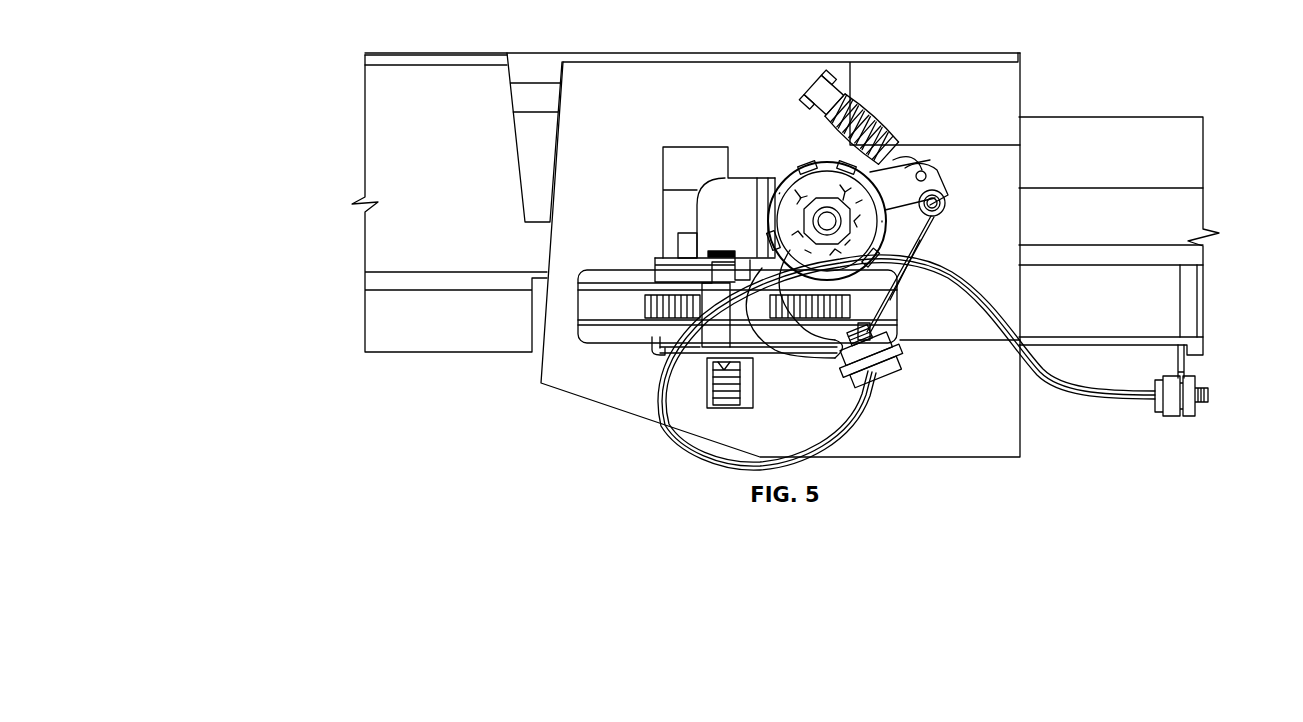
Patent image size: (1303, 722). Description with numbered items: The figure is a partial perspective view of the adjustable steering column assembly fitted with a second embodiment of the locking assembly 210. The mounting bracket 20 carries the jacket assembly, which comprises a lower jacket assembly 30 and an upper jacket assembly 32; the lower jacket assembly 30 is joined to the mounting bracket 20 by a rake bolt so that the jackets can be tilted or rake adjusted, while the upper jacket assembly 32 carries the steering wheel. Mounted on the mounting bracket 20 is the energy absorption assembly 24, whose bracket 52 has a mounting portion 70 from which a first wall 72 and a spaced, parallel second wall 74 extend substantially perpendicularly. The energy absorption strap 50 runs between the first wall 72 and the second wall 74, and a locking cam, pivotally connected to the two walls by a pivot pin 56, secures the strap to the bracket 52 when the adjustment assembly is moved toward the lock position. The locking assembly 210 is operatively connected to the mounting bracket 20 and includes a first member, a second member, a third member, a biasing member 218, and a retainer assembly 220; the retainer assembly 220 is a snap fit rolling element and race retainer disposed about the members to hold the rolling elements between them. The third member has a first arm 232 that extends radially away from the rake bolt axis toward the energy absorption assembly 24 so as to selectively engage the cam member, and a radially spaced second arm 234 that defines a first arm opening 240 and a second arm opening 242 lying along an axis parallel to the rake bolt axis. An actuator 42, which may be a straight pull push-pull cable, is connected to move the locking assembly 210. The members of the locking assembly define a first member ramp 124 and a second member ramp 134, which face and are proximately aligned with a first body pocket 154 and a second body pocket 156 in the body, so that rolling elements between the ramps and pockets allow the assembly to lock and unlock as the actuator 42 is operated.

The mounting bracket 20 is at (958, 50).
The energy absorption assembly 24 is at (630, 354).
The lower jacket assembly 30 is at (403, 335).
The upper jacket assembly 32 is at (1137, 133).
The actuator 42 is at (926, 236).
The energy absorption strap 50 is at (543, 370).
The bracket 52 is at (688, 210).
The pivot pin 56 is at (718, 277).
The mounting portion 70 is at (705, 227).
The first wall 72 is at (703, 357).
The second wall 74 is at (693, 265).
The first member ramp 124 is at (798, 170).
The second member ramp 134 is at (752, 235).
The first body pocket 154 is at (758, 225).
The second body pocket 156 is at (778, 215).
The locking assembly 210 is at (783, 174).
The biasing member 218 is at (882, 125).
The retainer assembly 220 is at (898, 285).
The first arm 232 is at (802, 362).
The second arm 234 is at (936, 185).
The first arm opening 240 is at (925, 170).
The second arm opening 242 is at (948, 205).